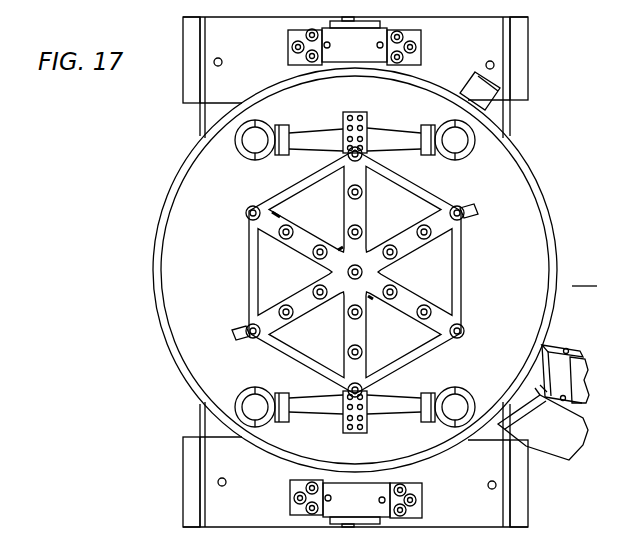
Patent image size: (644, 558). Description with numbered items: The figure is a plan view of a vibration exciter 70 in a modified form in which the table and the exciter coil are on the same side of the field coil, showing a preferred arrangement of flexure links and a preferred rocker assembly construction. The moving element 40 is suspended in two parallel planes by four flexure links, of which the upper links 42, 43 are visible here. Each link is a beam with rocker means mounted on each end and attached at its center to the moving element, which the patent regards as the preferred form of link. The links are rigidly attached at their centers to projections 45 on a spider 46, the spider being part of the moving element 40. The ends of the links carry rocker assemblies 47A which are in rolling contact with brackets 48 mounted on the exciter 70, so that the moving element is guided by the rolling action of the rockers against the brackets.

The moving element 40 is at (425, 286).
The upper flexure link 42 is at (393, 407).
The upper flexure link 43 is at (380, 137).
The projection 45 is at (363, 425).
The spider 46 is at (462, 317).
The rocker assembly 47A is at (284, 130).
The bracket 48 is at (262, 155).
The vibration exciter 70 is at (375, 272).